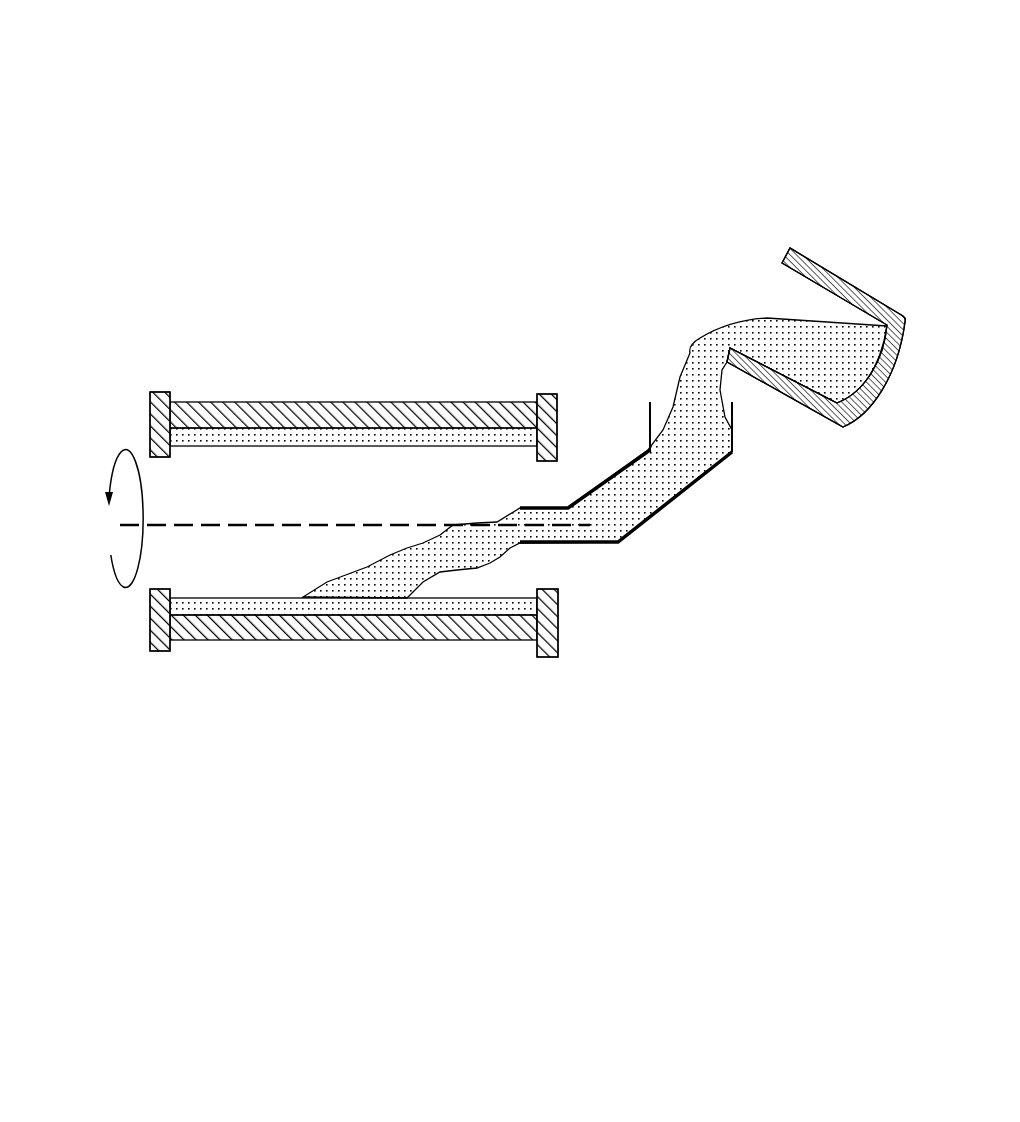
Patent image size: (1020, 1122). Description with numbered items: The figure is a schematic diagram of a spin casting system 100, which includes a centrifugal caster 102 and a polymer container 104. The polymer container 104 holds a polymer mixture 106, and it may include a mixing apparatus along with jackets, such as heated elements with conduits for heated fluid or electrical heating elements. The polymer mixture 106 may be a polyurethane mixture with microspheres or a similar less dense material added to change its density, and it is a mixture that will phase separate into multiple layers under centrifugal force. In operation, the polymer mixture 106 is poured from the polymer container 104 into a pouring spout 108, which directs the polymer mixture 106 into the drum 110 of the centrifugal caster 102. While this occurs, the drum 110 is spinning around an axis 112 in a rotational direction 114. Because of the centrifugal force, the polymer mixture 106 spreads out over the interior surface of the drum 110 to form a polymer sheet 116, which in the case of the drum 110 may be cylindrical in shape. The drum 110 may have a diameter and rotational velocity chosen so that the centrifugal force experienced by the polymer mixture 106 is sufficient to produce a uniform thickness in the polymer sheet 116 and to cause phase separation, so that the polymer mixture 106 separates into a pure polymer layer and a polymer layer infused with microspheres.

The spin casting system 100 is at (156, 63).
The centrifugal caster 102 is at (137, 343).
The polymer container 104 is at (843, 276).
The polymer mixture 106 is at (687, 353).
The pouring spout 108 is at (733, 450).
The drum 110 is at (150, 425).
The axis 112 is at (130, 525).
The rotational direction 114 is at (108, 557).
The polymer sheet 116 is at (243, 598).